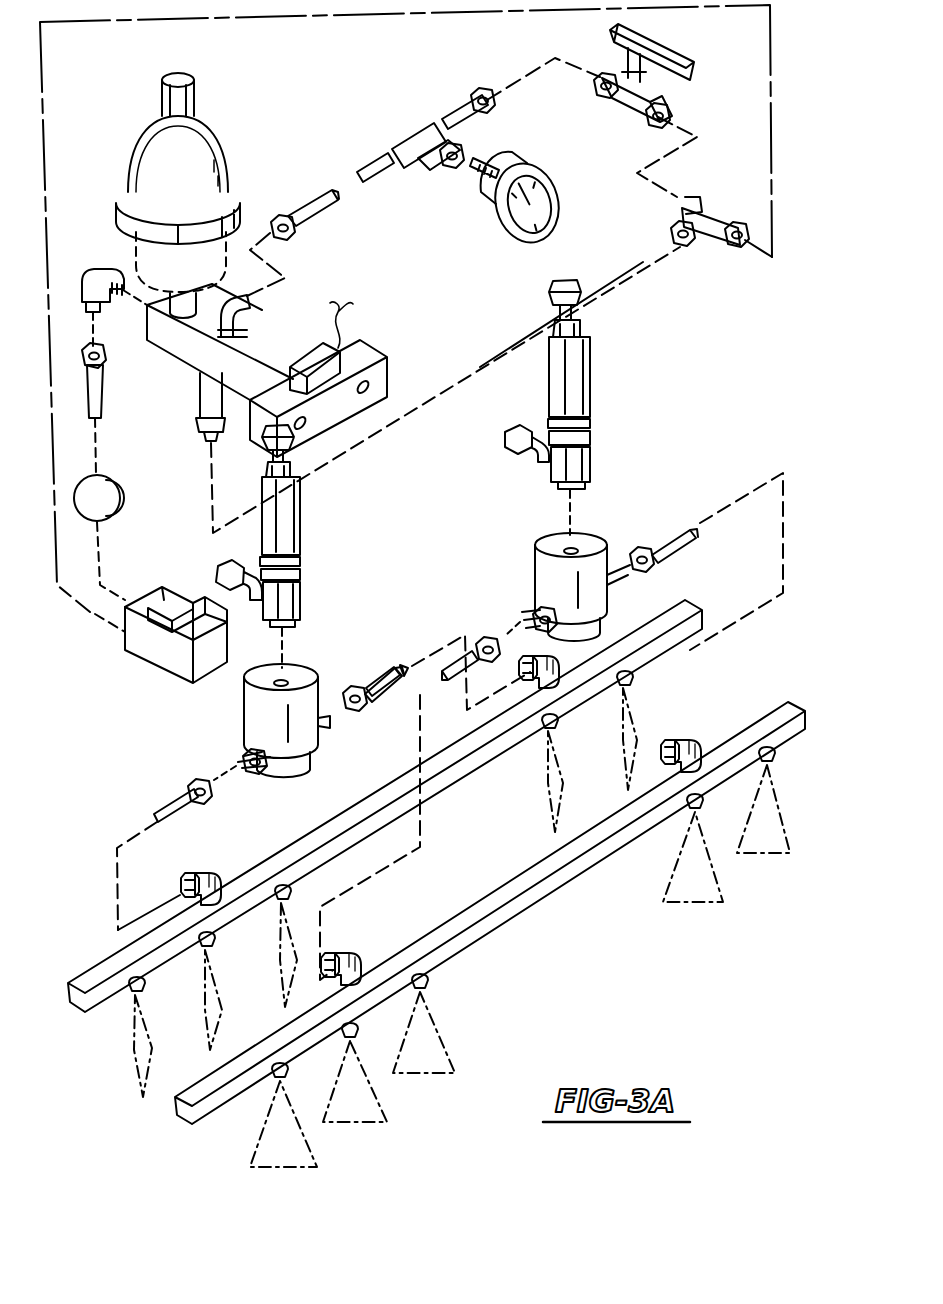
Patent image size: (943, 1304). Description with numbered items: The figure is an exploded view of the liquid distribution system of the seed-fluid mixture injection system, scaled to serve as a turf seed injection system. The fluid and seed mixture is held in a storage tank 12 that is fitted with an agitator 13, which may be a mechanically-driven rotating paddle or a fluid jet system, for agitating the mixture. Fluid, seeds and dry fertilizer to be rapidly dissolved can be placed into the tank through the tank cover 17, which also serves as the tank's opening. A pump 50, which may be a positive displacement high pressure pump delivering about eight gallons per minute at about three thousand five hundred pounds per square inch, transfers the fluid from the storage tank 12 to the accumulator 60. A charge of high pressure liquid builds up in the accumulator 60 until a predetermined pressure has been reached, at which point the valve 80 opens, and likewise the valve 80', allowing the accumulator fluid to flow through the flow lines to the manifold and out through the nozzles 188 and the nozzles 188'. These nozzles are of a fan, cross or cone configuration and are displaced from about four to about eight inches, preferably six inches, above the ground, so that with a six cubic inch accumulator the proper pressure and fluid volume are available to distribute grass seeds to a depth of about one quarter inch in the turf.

The accumulator 60 is at (222, 181).
The pump 50 is at (112, 482).
The tank cover 17 is at (183, 597).
The storage tank 12 is at (207, 617).
The agitator 13 is at (152, 658).
The valve 80 is at (582, 407).
The valve 80' is at (291, 546).
The nozzles 188 is at (520, 957).
The nozzles 188' is at (433, 884).